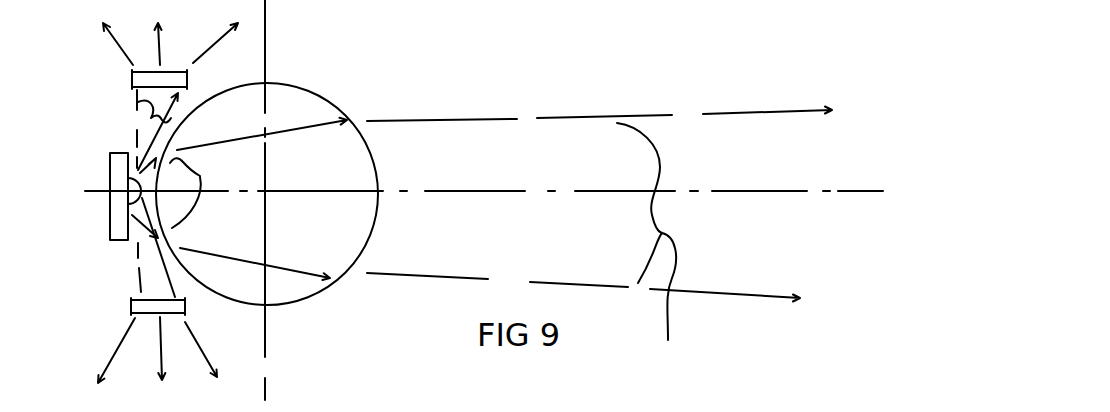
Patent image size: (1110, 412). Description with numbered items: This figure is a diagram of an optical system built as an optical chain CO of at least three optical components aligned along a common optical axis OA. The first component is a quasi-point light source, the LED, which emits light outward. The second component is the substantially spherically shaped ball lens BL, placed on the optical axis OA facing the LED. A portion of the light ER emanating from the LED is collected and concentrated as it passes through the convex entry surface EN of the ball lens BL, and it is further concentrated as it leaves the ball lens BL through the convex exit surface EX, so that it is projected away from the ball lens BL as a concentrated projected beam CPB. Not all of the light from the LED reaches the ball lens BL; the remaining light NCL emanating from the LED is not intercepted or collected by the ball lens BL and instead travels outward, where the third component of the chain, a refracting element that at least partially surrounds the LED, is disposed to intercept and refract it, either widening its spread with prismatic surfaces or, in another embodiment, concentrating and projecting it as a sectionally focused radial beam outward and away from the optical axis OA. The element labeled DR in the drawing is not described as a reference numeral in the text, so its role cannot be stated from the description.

The element LED is at (127, 193).
The light not collected by the ball lens NCL is at (137, 105).
The light emanating from the LED ER is at (200, 176).
The convex entry surface EN is at (148, 231).
The dichroic reflector DR is at (130, 303).
The ball lens BL is at (303, 102).
The convex exit surface EX is at (373, 223).
The optical chain CO is at (744, 88).
The optical axis OA is at (853, 192).
The concentrated projected beam CPB is at (655, 248).